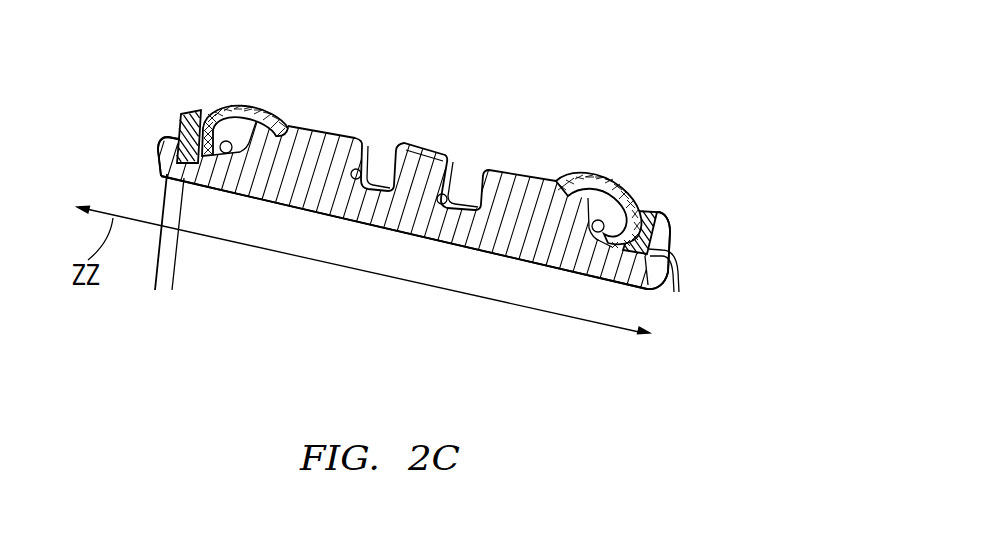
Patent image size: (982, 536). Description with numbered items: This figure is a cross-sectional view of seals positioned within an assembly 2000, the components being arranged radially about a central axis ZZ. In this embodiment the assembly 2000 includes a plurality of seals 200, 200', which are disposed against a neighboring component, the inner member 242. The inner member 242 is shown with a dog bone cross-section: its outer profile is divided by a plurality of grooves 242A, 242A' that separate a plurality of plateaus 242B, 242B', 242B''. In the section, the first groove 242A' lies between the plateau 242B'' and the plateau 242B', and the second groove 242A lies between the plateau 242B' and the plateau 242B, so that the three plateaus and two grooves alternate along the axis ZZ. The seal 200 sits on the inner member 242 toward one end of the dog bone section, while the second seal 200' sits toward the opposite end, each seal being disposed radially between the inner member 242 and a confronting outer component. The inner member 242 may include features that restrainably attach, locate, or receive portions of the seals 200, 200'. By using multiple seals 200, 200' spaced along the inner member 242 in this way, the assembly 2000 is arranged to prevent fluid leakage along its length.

The assembly 2000 is at (612, 43).
The inner member 242 is at (548, 183).
The plateau 242B'' is at (334, 120).
The groove 242A' is at (385, 146).
The plateau 242B' is at (438, 134).
The groove 242A is at (470, 165).
The plateau 242B is at (519, 132).
The seal 200' is at (249, 99).
The seal 200 is at (603, 193).